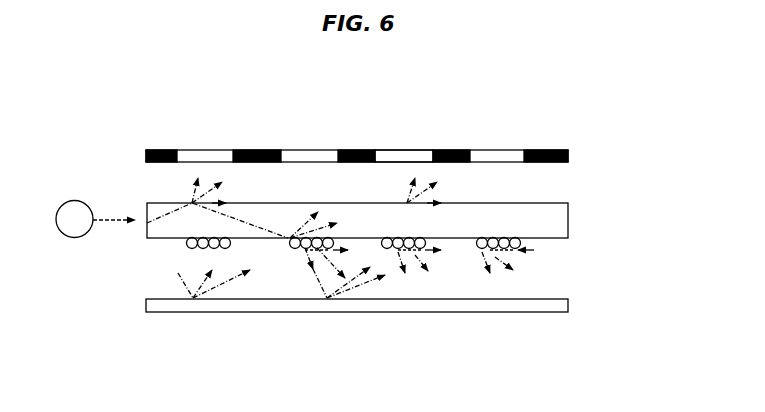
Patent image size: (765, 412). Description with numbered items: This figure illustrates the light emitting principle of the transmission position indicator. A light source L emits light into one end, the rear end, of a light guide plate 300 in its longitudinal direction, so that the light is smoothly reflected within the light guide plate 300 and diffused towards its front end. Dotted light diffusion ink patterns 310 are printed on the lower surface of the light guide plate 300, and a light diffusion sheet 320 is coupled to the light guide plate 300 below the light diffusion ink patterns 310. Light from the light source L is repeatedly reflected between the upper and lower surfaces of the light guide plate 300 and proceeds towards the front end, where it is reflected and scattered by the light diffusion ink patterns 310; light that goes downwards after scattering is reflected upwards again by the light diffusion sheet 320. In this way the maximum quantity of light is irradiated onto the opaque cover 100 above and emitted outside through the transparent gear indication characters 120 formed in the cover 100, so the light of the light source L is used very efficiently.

The light source L is at (75, 210).
The cover 100 is at (510, 146).
The gear indication characters 120 is at (398, 148).
The light guide plate 300 is at (562, 213).
The light diffusion ink patterns 310 is at (520, 243).
The light diffusion sheet 320 is at (420, 312).